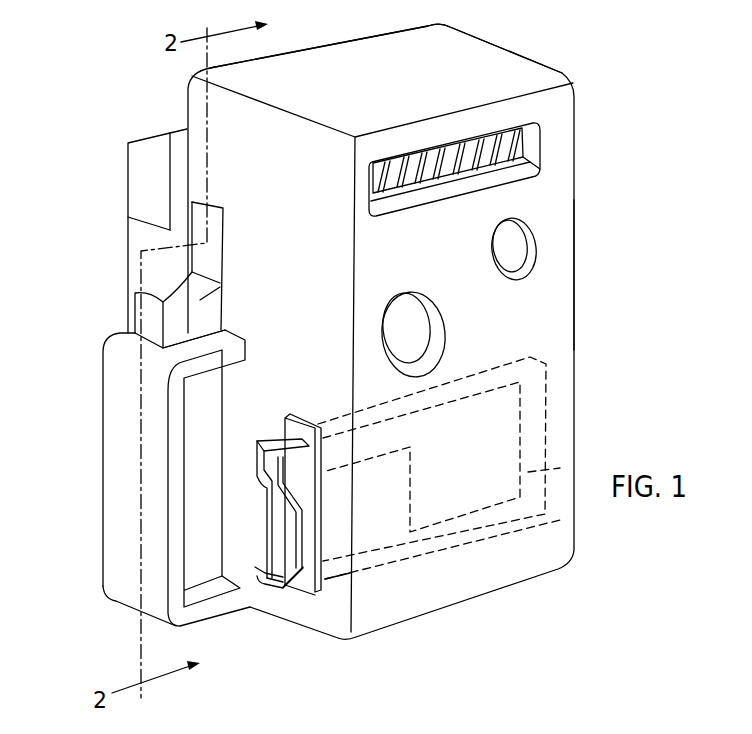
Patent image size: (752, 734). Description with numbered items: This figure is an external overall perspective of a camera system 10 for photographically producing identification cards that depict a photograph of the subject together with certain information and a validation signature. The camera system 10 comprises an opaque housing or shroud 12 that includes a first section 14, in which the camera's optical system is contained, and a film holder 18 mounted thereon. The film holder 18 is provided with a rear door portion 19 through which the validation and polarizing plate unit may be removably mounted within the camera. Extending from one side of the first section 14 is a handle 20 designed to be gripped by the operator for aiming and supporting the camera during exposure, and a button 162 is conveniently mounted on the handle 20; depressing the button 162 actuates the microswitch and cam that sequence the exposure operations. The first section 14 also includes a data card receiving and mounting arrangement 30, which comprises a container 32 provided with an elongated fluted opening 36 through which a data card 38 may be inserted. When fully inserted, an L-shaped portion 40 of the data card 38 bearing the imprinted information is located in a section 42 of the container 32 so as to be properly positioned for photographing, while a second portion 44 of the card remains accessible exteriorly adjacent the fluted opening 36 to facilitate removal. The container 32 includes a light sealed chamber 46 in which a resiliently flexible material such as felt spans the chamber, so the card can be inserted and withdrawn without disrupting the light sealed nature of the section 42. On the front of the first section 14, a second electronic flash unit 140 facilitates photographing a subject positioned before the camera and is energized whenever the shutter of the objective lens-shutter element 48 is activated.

The camera system 10 is at (590, 279).
The opaque housing or shroud 12 is at (465, 32).
The first section 14 is at (565, 214).
The film holder 18 is at (128, 173).
The rear door portion 19 is at (128, 253).
The handle 20 is at (102, 502).
The data card receiving and mounting arrangement 30 is at (290, 600).
The container 32 is at (548, 402).
The elongated fluted opening 36 is at (255, 577).
The data card 38 is at (267, 504).
The L-shaped portion 40 is at (487, 443).
The section 42 is at (528, 472).
The second portion 44 is at (305, 598).
The light sealed chamber 46 is at (332, 575).
The objective lens-shutter element 48 is at (408, 307).
The second electronic flash unit 140 is at (520, 144).
The button 162 is at (150, 321).